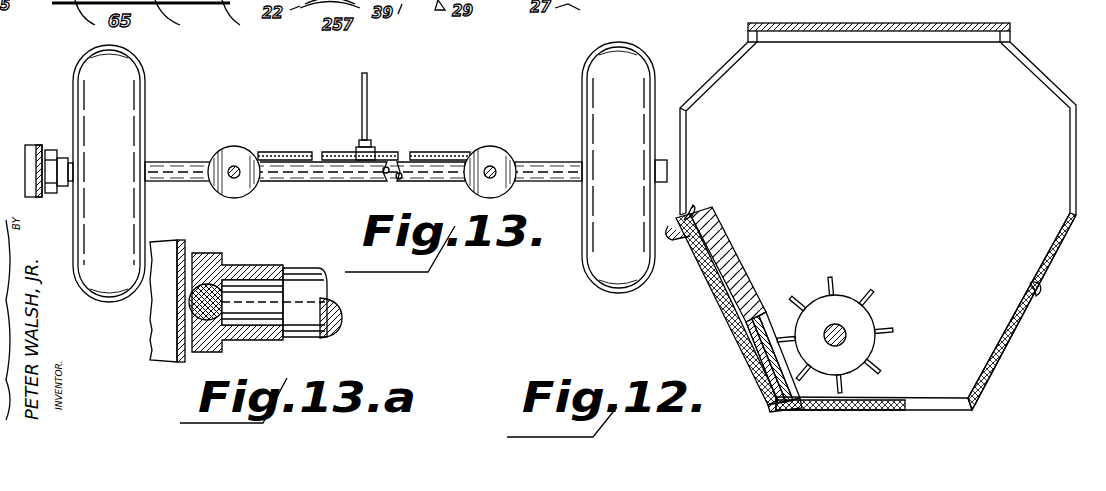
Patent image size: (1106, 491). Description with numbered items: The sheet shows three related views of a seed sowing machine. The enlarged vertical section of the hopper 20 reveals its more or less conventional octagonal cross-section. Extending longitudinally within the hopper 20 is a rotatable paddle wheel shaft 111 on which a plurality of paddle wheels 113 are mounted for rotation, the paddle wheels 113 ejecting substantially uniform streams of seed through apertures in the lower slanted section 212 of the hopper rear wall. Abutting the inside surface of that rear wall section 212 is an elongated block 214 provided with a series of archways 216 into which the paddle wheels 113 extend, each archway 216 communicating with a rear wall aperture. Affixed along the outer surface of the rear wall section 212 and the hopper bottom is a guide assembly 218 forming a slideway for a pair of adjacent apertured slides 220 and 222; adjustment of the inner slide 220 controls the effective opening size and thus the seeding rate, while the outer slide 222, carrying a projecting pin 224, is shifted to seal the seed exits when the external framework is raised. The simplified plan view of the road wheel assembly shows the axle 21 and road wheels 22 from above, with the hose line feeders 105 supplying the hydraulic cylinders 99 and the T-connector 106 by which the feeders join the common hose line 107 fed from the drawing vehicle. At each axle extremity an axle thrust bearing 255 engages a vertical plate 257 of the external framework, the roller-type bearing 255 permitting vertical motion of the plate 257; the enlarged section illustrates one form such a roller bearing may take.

In FIG. 12, the hopper 20 is at (890, 84).
In FIG. 13, the axle 21 is at (355, 182).
In FIG. 13, the road wheels 22 is at (128, 94).
In FIG. 13, the hydraulic cylinders 99 is at (222, 196).
In FIG. 13, the hose lines 105 is at (283, 152).
In FIG. 13, the T-connector 106 is at (370, 150).
In FIG. 13, the common hose line 107 is at (368, 108).
In FIG. 12, the paddle wheel shaft 111 is at (840, 325).
In FIG. 12, the paddle wheels 113 is at (870, 318).
In FIG. 12, the lower slanted section of hopper rear wall 212 is at (695, 205).
In FIG. 12, the elongated block 214 is at (712, 238).
In FIG. 12, the archways 216 is at (760, 318).
In FIG. 12, the guide assembly 218 is at (703, 278).
In FIG. 12, the inner slide 220 is at (755, 338).
In FIG. 12, the outer slide 222 is at (748, 325).
In FIG. 12, the pin 224 is at (758, 356).
In FIG. 13, the axle thrust bearings 255 is at (62, 152).
In FIG. 13a, the axle thrust bearings 255 is at (235, 265).
In FIG. 13, the vertical plates 257 is at (40, 140).
In FIG. 13a, the vertical plates 257 is at (186, 246).